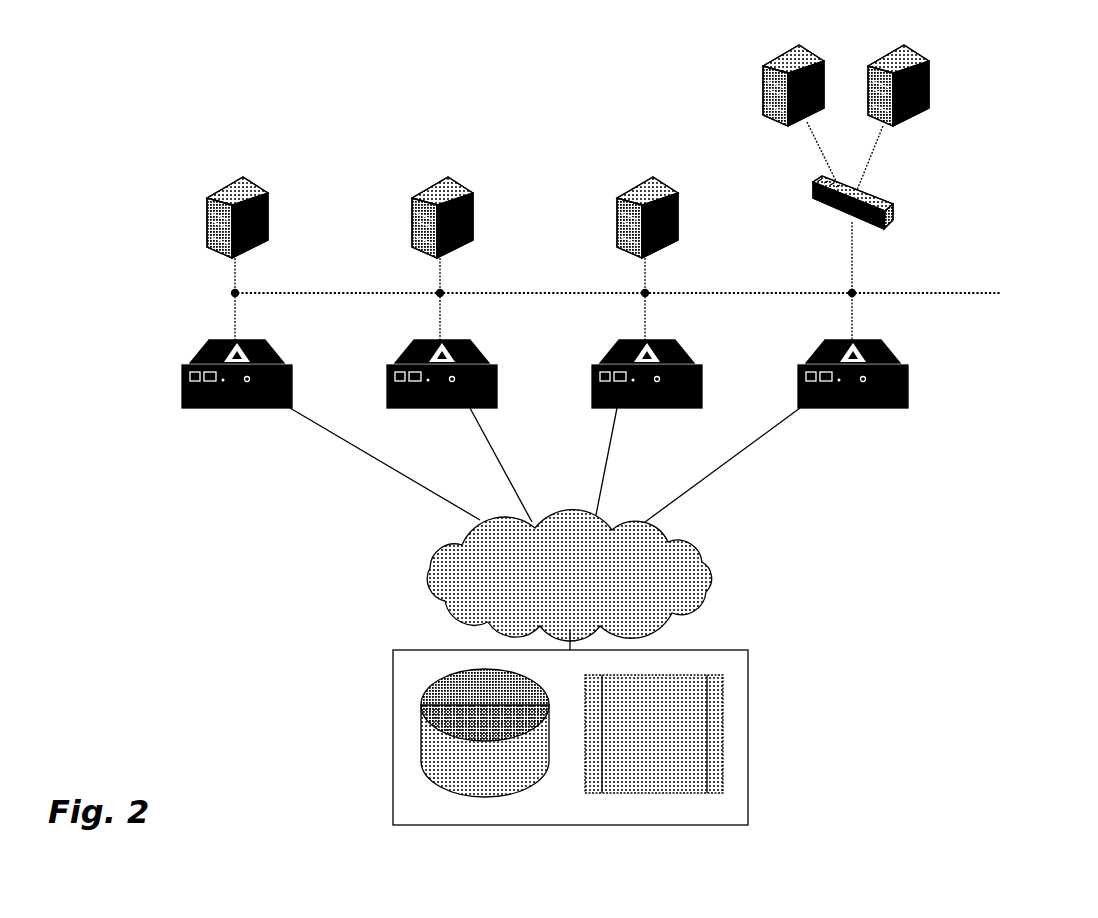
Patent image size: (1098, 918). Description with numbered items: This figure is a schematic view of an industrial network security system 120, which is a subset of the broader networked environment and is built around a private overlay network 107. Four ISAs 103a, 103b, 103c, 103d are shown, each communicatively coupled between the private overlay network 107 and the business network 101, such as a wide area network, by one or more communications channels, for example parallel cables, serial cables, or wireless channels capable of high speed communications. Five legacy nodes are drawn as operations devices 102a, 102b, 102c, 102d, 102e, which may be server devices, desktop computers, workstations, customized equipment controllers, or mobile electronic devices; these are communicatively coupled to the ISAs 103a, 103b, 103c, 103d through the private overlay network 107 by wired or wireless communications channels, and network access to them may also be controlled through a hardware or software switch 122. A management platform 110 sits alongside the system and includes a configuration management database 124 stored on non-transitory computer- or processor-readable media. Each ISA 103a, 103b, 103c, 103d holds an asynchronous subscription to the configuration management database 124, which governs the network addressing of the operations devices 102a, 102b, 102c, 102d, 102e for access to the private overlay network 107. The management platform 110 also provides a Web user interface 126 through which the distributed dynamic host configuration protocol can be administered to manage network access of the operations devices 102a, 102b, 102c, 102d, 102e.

The industrial network security system 120 is at (1002, 62).
The private overlay network 107 is at (918, 292).
The operations device 102a is at (225, 188).
The operations device 102b is at (432, 190).
The operations device 102c is at (637, 188).
The operations device 102d is at (782, 62).
The operations device 102e is at (893, 52).
The switch 122 is at (870, 200).
The ISA 103a is at (180, 372).
The ISA 103b is at (396, 372).
The ISA 103c is at (599, 372).
The ISA 103d is at (809, 372).
The business network 101 is at (680, 550).
The management platform 110 is at (717, 821).
The configuration management database 124 is at (440, 756).
The Web user interface 126 is at (722, 710).